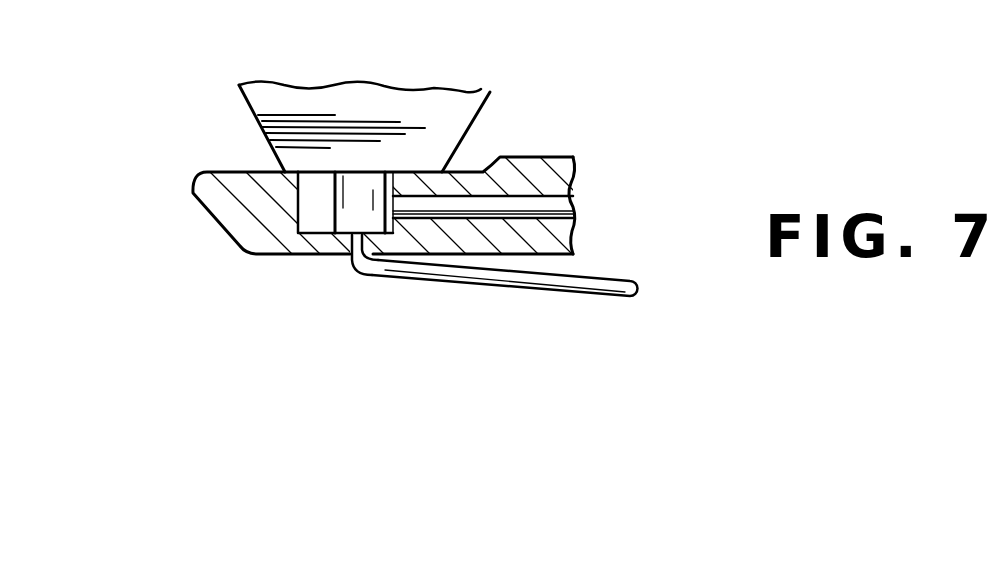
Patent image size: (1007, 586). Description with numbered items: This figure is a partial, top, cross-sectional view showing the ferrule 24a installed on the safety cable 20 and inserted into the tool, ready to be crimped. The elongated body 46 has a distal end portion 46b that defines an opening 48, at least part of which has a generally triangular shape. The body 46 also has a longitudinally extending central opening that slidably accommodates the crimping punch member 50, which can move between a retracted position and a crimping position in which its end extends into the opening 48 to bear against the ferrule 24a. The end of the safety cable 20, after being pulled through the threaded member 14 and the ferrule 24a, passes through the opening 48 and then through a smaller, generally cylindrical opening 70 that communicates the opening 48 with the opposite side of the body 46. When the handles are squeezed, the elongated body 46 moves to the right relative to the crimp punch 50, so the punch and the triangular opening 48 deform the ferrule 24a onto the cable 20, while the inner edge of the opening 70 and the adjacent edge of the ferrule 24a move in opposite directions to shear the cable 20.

The threaded member 14 is at (471, 92).
The safety cable 20 is at (572, 286).
The ferrule 24a is at (352, 183).
The elongated body 46 is at (558, 172).
The distal end portion 46b is at (228, 207).
The opening 48 is at (296, 182).
The crimping punch member 50 is at (560, 207).
The cylindrical opening 70 is at (362, 265).